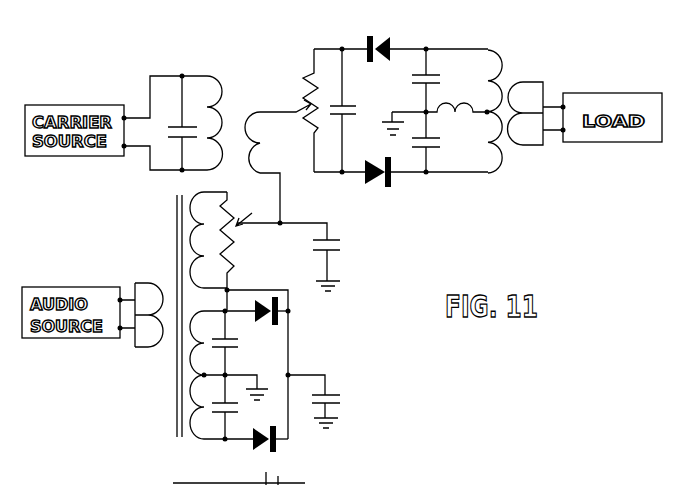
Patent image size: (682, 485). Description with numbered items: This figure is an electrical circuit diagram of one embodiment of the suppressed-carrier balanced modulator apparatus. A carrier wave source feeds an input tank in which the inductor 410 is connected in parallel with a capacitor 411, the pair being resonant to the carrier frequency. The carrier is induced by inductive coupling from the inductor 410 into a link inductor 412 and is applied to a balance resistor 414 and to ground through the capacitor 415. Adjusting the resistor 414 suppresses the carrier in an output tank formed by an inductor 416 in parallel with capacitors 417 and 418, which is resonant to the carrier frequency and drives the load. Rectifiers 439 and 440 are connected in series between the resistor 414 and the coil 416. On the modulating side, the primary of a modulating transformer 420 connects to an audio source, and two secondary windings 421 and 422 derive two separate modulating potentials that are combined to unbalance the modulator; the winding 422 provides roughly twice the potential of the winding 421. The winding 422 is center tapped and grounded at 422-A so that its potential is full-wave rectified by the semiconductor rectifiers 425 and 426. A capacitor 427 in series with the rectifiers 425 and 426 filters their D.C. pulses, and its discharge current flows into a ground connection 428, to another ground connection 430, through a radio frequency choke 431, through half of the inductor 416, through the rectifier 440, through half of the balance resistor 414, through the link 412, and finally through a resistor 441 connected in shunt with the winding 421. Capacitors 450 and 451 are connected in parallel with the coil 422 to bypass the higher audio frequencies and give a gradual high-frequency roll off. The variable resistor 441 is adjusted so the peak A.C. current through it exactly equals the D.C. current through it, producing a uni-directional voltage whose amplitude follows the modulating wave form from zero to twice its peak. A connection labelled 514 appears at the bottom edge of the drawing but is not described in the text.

The inductor 410 is at (237, 78).
The capacitor 411 is at (168, 130).
The link inductor 412 is at (247, 113).
The balance resistor 414 is at (312, 80).
The capacitor 415 is at (338, 249).
The inductor 416 is at (503, 73).
The capacitor 417 is at (431, 80).
The capacitor 418 is at (441, 144).
The modulating transformer 420 is at (176, 243).
The secondary winding 421 is at (192, 197).
The secondary winding 422 is at (193, 440).
The center tap ground 422-A is at (258, 384).
The semiconductor rectifier 425 is at (246, 444).
The semiconductor rectifier 426 is at (254, 306).
The capacitor 427 is at (340, 401).
The ground connection 428 is at (340, 420).
The ground connection 430 is at (384, 121).
The radio frequency choke 431 is at (449, 105).
The rectifier 439 is at (382, 44).
The rectifier 440 is at (392, 182).
The variable resistor 441 is at (232, 262).
The capacitor 450 is at (236, 343).
The capacitor 451 is at (237, 407).
The connection 514 is at (276, 482).